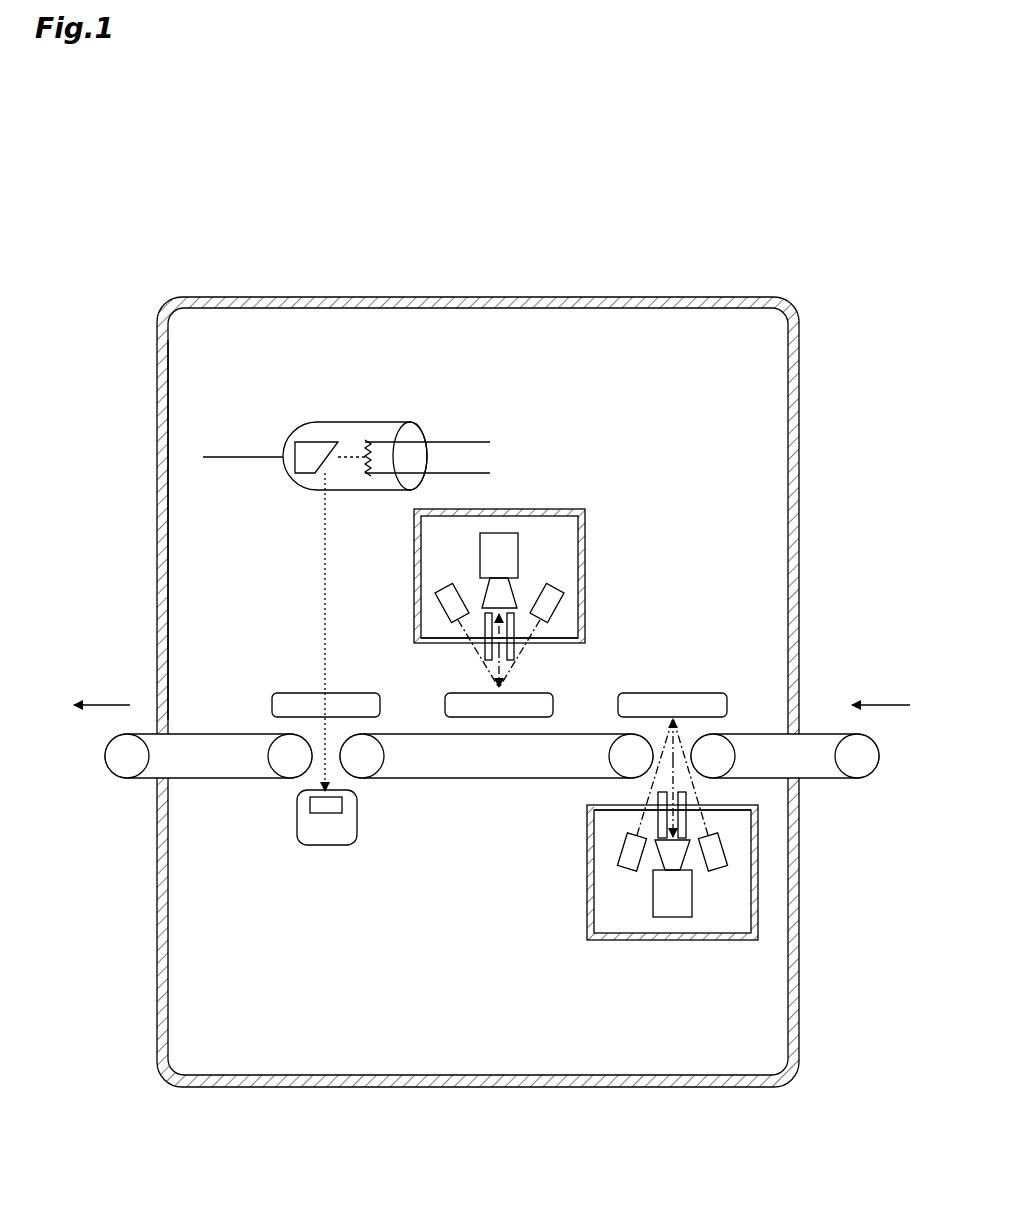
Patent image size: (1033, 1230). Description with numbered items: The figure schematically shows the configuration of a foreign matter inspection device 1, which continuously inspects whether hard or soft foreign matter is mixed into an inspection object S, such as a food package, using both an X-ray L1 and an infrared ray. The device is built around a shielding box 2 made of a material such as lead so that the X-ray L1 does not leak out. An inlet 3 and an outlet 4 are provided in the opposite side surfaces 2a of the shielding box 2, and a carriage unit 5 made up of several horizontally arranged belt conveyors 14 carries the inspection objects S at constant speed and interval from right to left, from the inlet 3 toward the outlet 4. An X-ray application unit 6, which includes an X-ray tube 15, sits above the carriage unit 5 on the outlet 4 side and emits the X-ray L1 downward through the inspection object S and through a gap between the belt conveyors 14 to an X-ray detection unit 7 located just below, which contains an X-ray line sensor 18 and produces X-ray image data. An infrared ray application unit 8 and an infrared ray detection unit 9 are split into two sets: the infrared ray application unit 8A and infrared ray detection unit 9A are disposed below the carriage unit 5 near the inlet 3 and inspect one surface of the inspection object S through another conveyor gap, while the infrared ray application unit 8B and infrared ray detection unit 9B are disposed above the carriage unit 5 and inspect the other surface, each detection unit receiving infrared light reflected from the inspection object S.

The foreign matter inspection device 1 is at (185, 228).
The shielding box 2 is at (468, 296).
The side surface 2a is at (157, 476).
The inlet 3 is at (799, 695).
The outlet 4 is at (158, 694).
The carriage unit 5 is at (490, 773).
The X-ray application unit 6 is at (346, 418).
The X-ray detection unit 7 is at (297, 865).
The infrared ray application unit 8 is at (514, 561).
The infrared ray application unit 8A is at (699, 870).
The infrared ray application unit 8B is at (514, 561).
The infrared ray detection unit 9 is at (627, 741).
The infrared ray detection unit 9A is at (699, 879).
The infrared ray detection unit 9B is at (514, 571).
The belt conveyor 14 is at (215, 733).
The X-ray tube 15 is at (352, 421).
The X-ray line sensor 18 is at (297, 806).
The X-ray L1 is at (325, 562).
The inspection object S is at (297, 692).